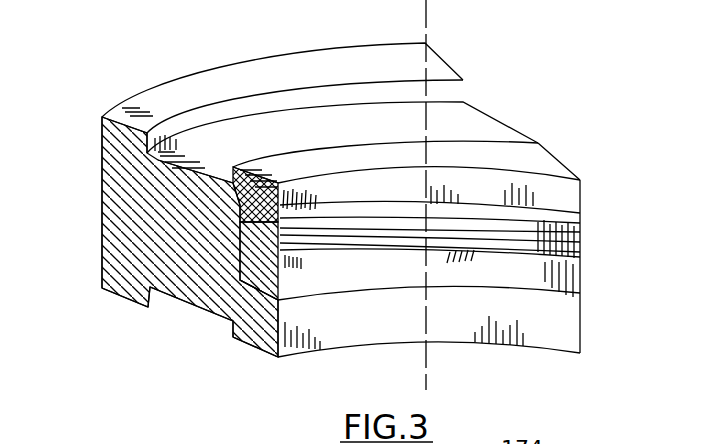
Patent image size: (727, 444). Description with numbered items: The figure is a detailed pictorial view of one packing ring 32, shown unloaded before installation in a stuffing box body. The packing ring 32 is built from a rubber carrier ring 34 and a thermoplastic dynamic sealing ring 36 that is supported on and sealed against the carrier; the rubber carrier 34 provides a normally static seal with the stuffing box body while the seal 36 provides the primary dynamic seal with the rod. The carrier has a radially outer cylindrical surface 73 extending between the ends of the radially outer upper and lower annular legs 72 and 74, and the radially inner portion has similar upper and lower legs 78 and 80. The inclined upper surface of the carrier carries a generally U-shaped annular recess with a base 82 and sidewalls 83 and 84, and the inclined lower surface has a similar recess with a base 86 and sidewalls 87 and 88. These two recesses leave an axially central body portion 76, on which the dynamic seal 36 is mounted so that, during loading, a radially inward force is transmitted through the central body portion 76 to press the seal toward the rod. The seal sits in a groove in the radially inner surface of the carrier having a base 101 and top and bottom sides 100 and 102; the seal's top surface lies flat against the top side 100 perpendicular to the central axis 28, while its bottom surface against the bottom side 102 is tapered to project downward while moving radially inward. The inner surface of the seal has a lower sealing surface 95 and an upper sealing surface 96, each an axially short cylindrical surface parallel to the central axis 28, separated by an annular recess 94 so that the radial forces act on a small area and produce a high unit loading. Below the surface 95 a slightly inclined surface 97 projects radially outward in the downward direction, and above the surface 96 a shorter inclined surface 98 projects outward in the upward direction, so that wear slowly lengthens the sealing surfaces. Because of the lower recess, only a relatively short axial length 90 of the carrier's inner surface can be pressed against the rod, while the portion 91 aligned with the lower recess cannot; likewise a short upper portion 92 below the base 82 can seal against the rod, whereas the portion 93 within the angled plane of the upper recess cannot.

The central axis 28 is at (427, 24).
The packing ring 32 is at (125, 97).
The rubber carrier ring 34 is at (172, 232).
The dynamic sealing ring 36 is at (290, 216).
The upper annular leg 72 is at (117, 143).
The radially outer cylindrical surface 73 is at (100, 212).
The lower annular leg 74 is at (100, 278).
The axially central body portion 76 is at (185, 280).
The upper leg 78 is at (253, 188).
The lower leg 80 is at (257, 352).
The base of upper annular recess 82 is at (216, 177).
The sidewall of upper annular recess 83 is at (182, 150).
The sidewall of upper annular recess 84 is at (232, 170).
The base of lower annular recess 86 is at (226, 270).
The sidewall of lower annular recess 87 is at (155, 312).
The sidewall of lower annular recess 88 is at (233, 330).
The short axial length of inner surface 90 is at (290, 312).
The portion of inner surface 91 is at (290, 347).
The upper portion of rubber carrier 92 is at (300, 208).
The portion of inner surface 93 is at (318, 182).
The annular recess 94 is at (300, 238).
The lower sealing surface 95 is at (513, 250).
The upper sealing surface 96 is at (490, 224).
The inclined surface 97 is at (286, 280).
The inclined surface 98 is at (340, 211).
The top side of groove 100 is at (285, 178).
The base of groove 101 is at (242, 275).
The bottom side of groove 102 is at (242, 330).